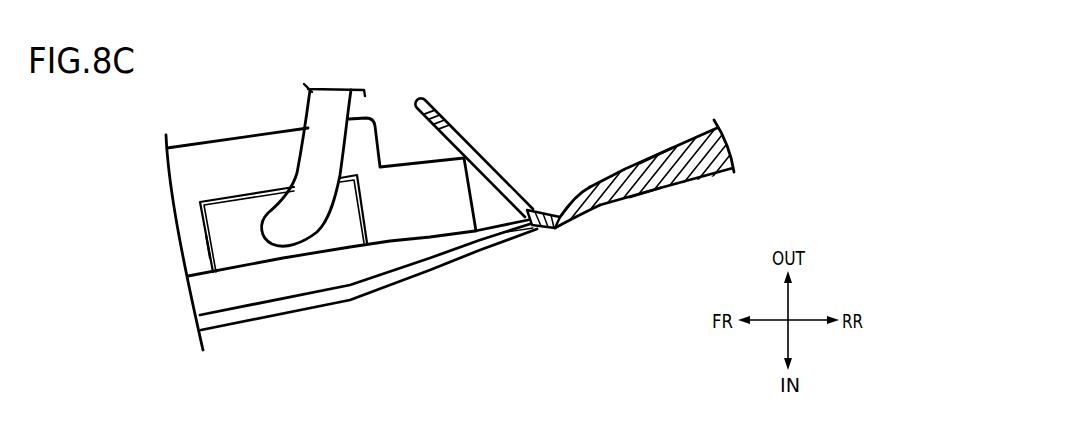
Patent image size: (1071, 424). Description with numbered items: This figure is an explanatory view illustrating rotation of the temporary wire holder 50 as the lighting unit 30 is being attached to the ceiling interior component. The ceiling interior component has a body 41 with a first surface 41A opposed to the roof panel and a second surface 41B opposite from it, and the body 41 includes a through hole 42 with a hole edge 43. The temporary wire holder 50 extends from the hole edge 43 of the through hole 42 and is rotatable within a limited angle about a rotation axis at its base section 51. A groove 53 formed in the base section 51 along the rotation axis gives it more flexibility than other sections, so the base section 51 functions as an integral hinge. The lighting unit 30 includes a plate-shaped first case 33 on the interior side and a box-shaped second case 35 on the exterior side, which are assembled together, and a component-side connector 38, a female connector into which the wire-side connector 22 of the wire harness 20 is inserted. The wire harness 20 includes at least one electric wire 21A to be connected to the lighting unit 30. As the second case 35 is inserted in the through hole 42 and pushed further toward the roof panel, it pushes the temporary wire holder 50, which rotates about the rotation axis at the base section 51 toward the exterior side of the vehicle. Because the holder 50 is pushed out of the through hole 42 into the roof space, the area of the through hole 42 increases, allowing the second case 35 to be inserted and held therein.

The wire harness 20 is at (252, 174).
The electric wire 21A is at (327, 112).
The wire-side connector 22 is at (230, 220).
The lighting unit 30 is at (468, 354).
The first case 33 is at (428, 195).
The second case 35 is at (388, 277).
The component-side connector 38 is at (217, 245).
The body 41 is at (701, 160).
The first surface 41A is at (661, 153).
The second surface 41B is at (655, 190).
The through hole 42 is at (524, 218).
The hole edge 43 is at (566, 230).
The temporary wire holder 50 is at (475, 136).
The base section 51 is at (524, 208).
The groove 53 is at (551, 216).